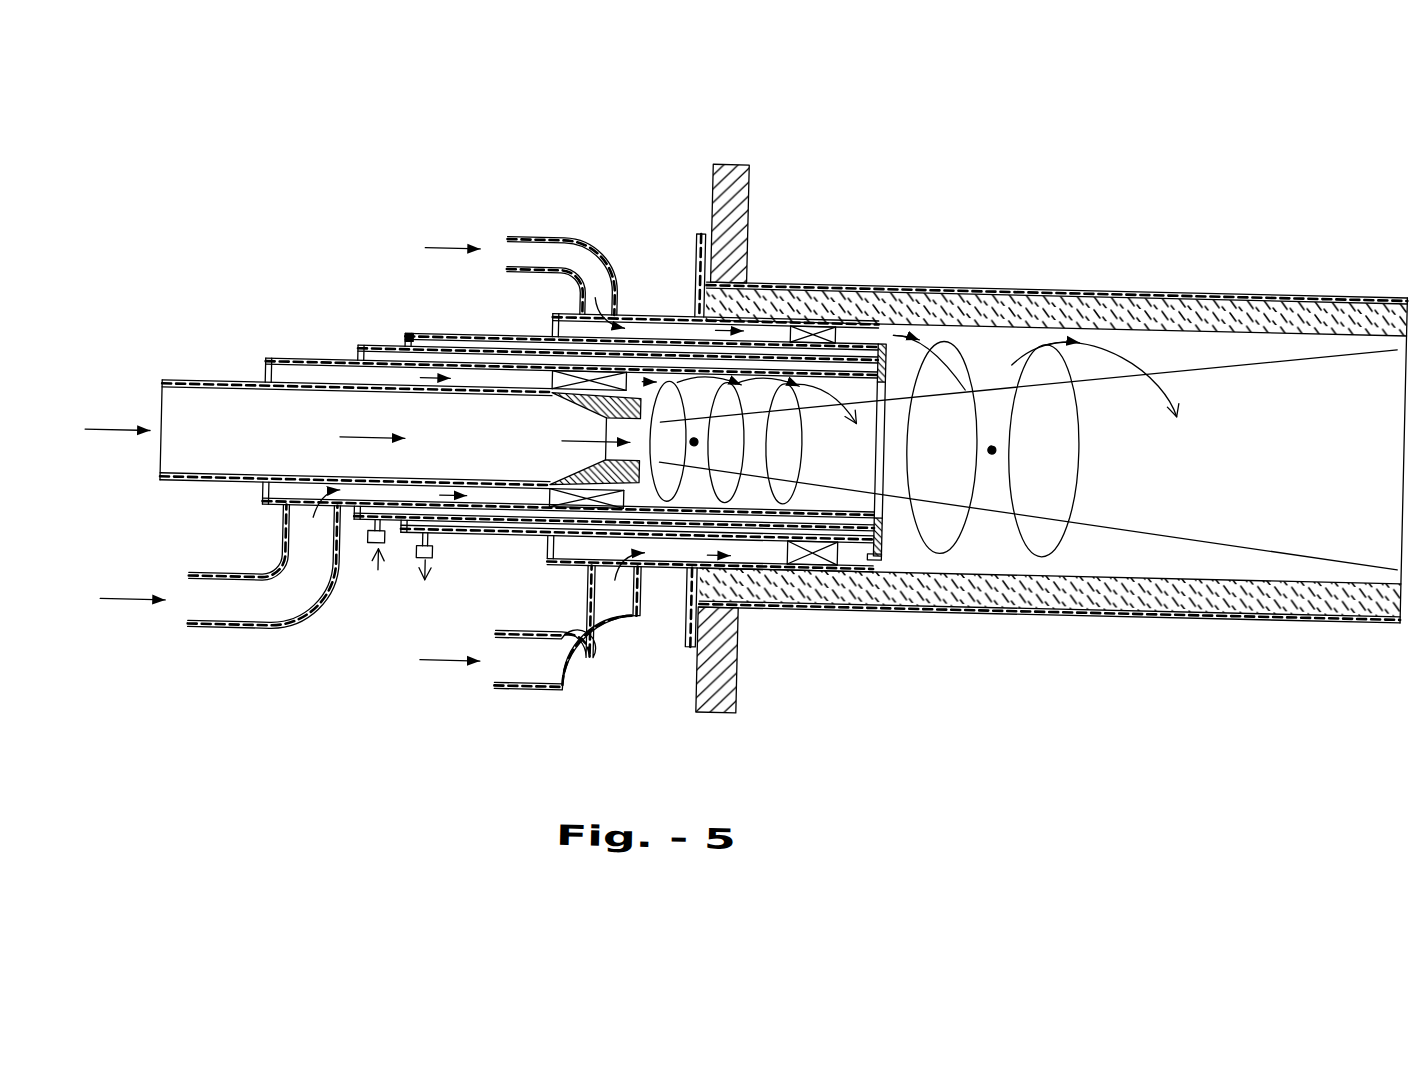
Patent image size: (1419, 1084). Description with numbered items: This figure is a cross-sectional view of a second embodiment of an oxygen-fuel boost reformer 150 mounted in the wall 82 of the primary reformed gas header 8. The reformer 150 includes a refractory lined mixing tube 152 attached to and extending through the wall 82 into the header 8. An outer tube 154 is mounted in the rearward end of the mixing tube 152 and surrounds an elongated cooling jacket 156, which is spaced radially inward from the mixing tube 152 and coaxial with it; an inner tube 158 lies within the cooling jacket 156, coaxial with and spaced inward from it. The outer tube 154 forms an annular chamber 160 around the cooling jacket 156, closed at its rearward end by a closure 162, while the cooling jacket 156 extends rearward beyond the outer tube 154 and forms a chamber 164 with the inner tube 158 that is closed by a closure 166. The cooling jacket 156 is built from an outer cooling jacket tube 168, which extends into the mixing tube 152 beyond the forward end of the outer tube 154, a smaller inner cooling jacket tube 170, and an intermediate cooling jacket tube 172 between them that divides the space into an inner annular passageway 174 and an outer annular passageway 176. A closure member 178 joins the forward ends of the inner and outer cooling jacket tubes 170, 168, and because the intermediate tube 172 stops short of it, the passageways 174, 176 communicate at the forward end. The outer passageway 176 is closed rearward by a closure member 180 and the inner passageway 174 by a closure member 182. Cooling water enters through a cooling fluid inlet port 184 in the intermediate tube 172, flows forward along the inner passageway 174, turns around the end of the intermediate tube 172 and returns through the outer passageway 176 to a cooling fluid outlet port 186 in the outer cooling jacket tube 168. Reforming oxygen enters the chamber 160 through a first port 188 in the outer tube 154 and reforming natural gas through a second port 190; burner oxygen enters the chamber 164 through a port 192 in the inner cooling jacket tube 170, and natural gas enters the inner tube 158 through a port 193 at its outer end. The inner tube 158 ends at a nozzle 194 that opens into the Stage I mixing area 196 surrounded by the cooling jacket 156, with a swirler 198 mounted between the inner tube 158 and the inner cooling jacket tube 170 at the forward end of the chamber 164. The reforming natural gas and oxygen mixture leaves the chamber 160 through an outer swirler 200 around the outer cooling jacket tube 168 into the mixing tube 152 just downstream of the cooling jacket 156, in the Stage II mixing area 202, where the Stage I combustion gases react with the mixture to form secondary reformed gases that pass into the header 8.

The primary reformed gas header 8 is at (762, 427).
The wall 82 is at (730, 226).
The oxygen-fuel boost reformer 150 is at (693, 253).
The refractory lined mixing tube 152 is at (1310, 281).
The outer tube 154 is at (559, 315).
The cooling jacket 156 is at (456, 338).
The inner tube 158 is at (224, 491).
The annular chamber 160 is at (688, 330).
The closure 162 is at (548, 552).
The chamber 164 is at (302, 384).
The closure 166 is at (262, 383).
The outer cooling jacket tube 168 is at (756, 342).
The inner cooling jacket tube 170 is at (856, 366).
The intermediate cooling jacket tube 172 is at (838, 354).
The inner annular passageway 174 is at (879, 545).
The outer annular passageway 176 is at (739, 534).
The closure member 178 is at (882, 526).
The closure member 180 is at (403, 344).
The closure member 182 is at (355, 358).
The cooling fluid inlet port 184 is at (382, 552).
The cooling fluid outlet port 186 is at (426, 566).
The first port 188 is at (616, 247).
The second port 190 is at (608, 564).
The port 192 is at (292, 529).
The port 193 is at (164, 472).
The nozzle 194 is at (545, 546).
The Stage I mixing area 196 is at (694, 442).
The swirler 198 is at (557, 381).
The swirler 200 is at (816, 564).
The Stage II mixing area 202 is at (992, 443).